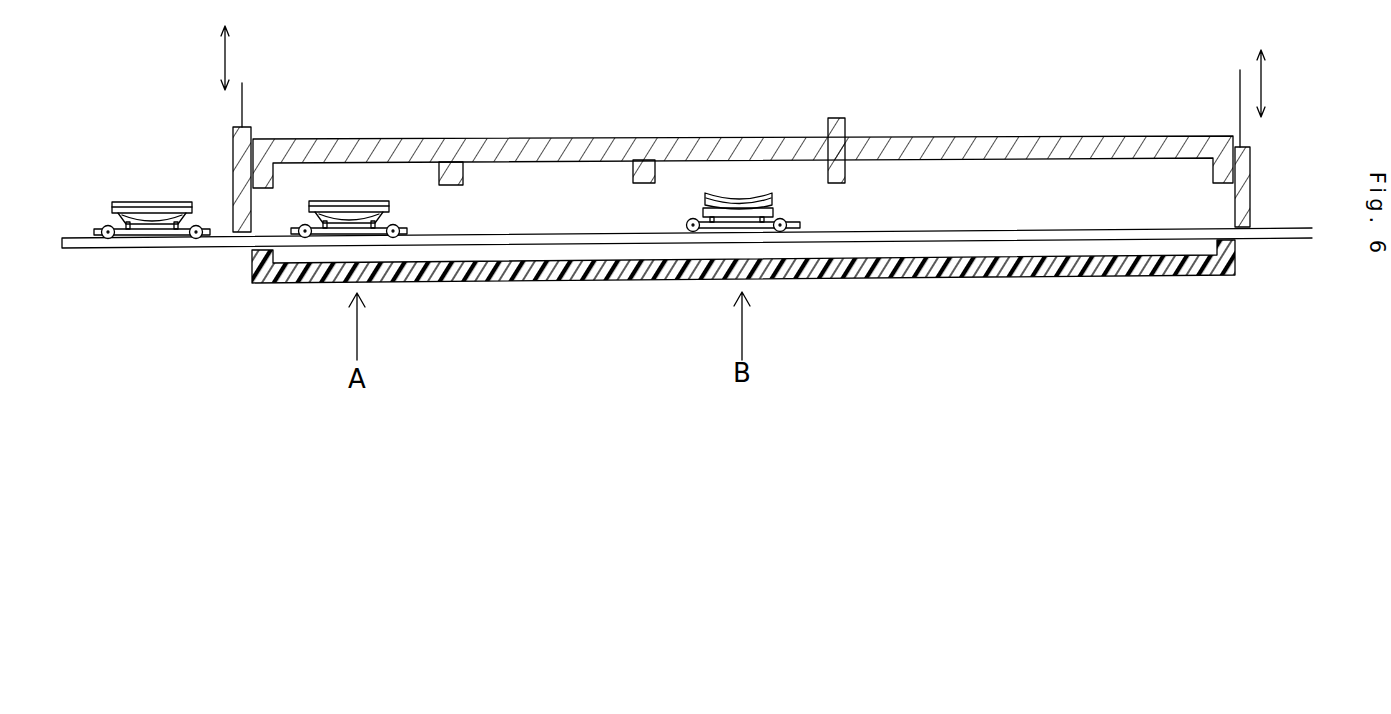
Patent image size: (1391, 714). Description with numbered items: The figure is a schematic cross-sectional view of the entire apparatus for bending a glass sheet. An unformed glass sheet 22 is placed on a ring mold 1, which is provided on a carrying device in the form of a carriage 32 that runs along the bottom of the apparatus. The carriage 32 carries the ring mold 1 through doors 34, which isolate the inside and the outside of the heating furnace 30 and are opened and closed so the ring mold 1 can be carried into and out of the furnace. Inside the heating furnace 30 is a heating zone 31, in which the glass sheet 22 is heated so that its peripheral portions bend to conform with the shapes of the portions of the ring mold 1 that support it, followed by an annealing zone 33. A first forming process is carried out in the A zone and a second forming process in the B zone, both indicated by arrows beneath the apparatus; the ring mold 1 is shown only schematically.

The ring mold 1 is at (131, 186).
The glass sheet 22 is at (152, 178).
The heating furnace 30 is at (743, 115).
The heating zone 31 is at (523, 188).
The carriage 32 is at (180, 233).
The annealing zone 33 is at (1055, 168).
The doors 34 is at (242, 128).